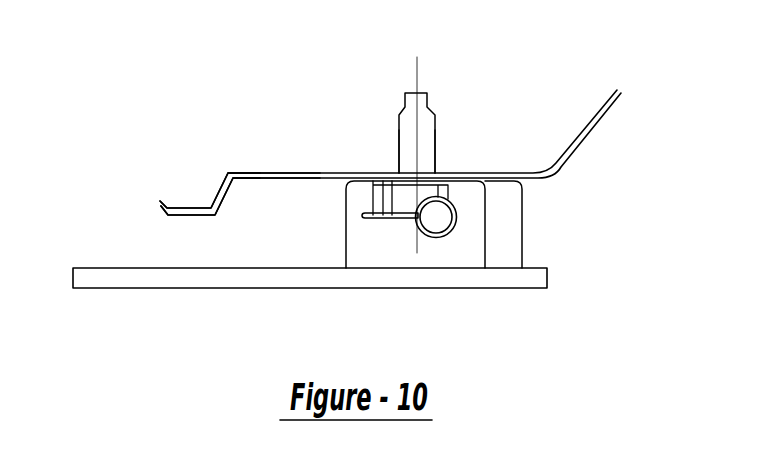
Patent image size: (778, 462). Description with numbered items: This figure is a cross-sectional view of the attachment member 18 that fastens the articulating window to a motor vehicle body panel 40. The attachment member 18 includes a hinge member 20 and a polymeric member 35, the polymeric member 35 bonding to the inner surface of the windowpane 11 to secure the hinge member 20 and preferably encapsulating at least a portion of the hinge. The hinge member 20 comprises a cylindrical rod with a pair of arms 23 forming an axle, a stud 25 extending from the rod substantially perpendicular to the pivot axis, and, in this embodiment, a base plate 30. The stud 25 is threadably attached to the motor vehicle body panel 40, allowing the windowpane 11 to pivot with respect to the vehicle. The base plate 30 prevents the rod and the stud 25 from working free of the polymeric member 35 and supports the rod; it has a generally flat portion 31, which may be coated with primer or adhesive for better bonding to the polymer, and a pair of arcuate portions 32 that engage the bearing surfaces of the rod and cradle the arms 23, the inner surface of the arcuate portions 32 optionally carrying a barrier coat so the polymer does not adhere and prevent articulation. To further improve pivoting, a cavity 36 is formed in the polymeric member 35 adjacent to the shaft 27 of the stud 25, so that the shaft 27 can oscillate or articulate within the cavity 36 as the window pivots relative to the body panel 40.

The windowpane 11 is at (178, 282).
The attachment member 18 is at (557, 193).
The hinge member 20 is at (332, 197).
The arms 23 is at (455, 212).
The stud 25 is at (433, 107).
The shaft 27 is at (417, 157).
The base plate 30 is at (363, 218).
The flat portion 31 is at (373, 181).
The arcuate portions 32 is at (456, 214).
The polymeric member 35 is at (522, 222).
The cavity 36 is at (383, 181).
The motor vehicle body panel 40 is at (260, 173).